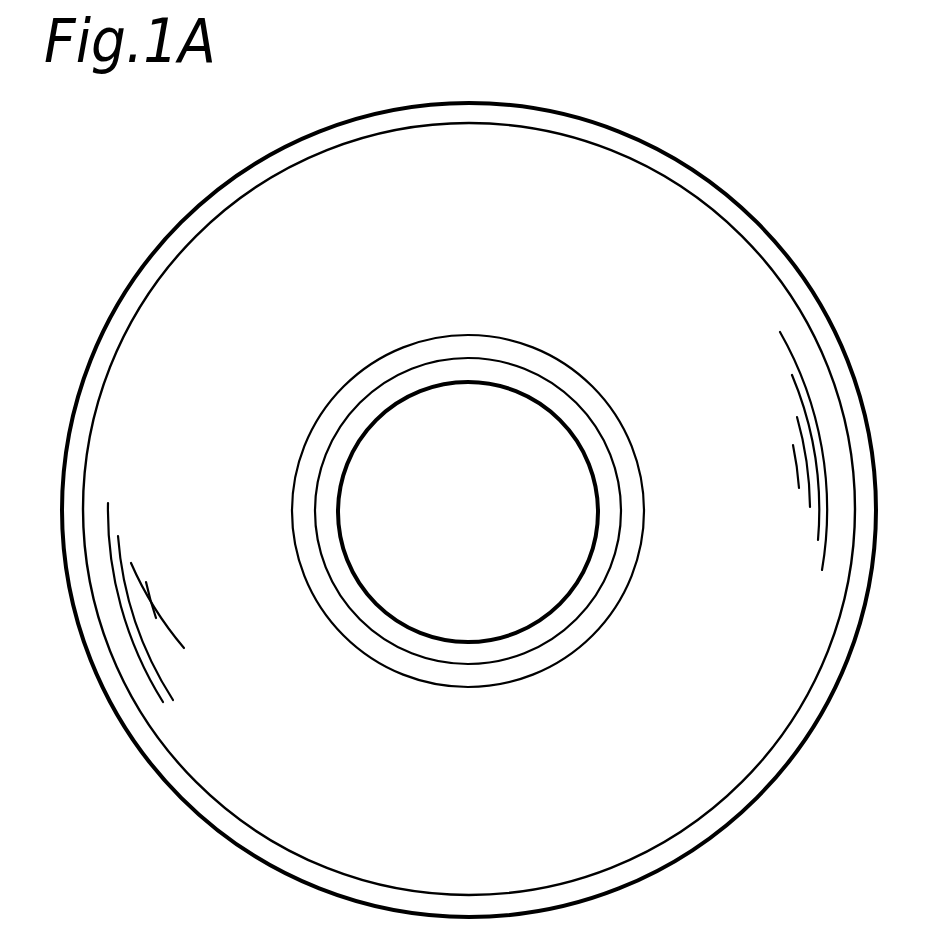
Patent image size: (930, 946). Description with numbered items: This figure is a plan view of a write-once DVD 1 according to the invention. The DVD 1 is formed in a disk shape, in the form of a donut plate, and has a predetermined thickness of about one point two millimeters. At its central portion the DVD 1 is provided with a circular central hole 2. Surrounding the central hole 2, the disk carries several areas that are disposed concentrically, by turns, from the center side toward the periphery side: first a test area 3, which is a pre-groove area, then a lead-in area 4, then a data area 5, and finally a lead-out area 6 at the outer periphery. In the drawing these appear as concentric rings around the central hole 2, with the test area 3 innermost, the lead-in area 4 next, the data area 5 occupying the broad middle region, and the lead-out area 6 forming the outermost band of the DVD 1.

The DVD 1 is at (460, 488).
The central hole 2 is at (548, 413).
The test area 3 is at (397, 632).
The lead-in area 4 is at (313, 555).
The data area 5 is at (284, 289).
The lead-out area 6 is at (142, 289).